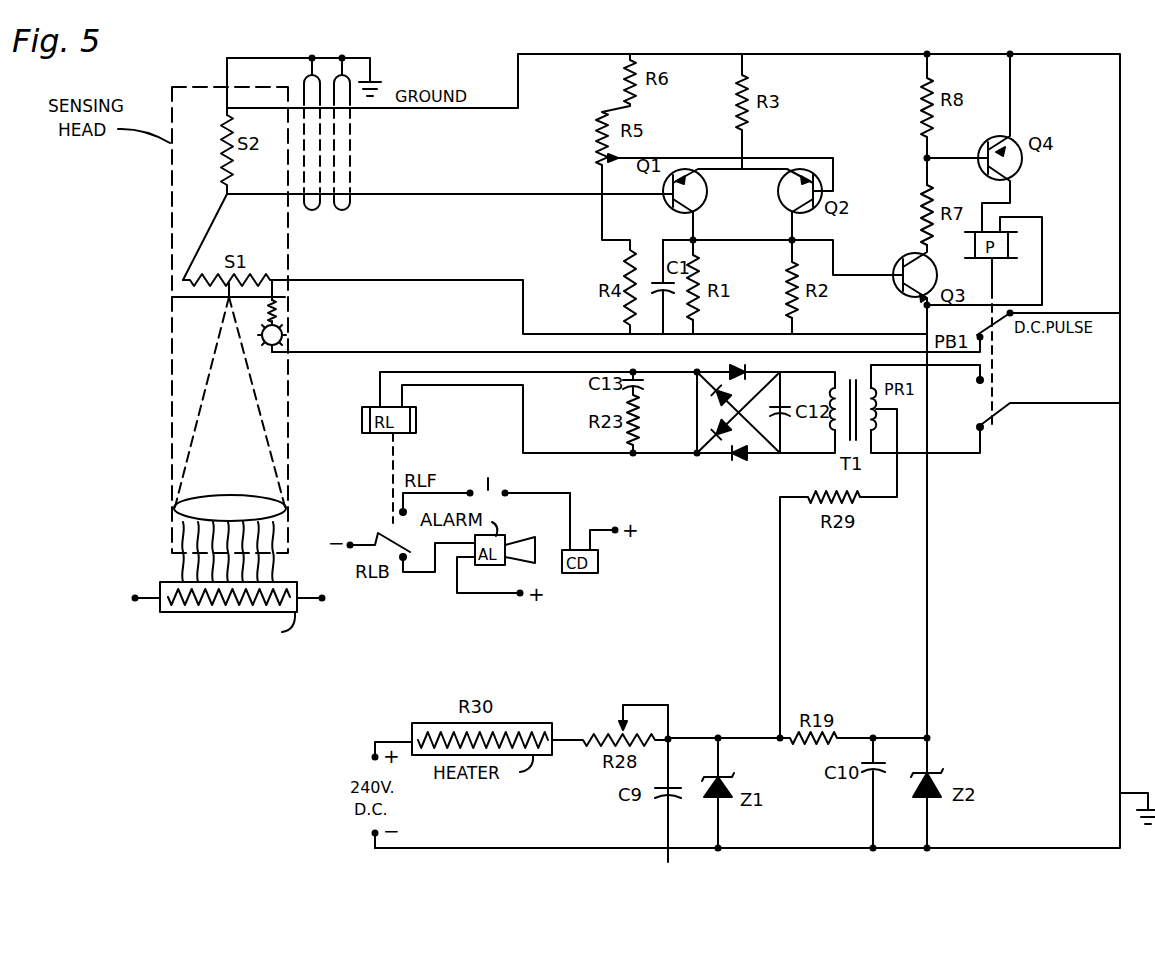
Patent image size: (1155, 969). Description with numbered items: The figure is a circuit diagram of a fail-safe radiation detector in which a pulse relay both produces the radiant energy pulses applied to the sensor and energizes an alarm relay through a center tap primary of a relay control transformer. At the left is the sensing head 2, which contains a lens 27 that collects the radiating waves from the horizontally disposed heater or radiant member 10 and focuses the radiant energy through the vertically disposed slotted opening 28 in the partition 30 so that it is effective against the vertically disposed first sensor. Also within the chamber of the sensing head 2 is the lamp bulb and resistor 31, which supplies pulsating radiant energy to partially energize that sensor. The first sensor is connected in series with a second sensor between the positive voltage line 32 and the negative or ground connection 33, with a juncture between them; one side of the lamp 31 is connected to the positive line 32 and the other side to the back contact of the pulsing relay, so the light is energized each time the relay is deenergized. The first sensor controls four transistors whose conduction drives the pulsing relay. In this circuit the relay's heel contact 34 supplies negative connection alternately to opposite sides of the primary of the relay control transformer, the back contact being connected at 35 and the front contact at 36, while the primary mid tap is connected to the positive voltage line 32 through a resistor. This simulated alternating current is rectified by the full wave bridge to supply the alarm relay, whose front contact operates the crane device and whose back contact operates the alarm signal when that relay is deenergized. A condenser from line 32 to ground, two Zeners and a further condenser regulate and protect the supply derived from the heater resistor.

The sensing head 2 is at (170, 234).
The heater or radiant member 10 is at (166, 582).
The lens 27 is at (248, 496).
The slotted opening 28 is at (226, 308).
The partition 30 is at (175, 298).
The lamp bulb and resistor 31 is at (284, 335).
The positive voltage line 32 is at (530, 278).
The negative or ground connection 33 is at (660, 871).
The heel contact 34 is at (232, 193).
The back contact 35 is at (986, 434).
The front contact 36 is at (986, 382).